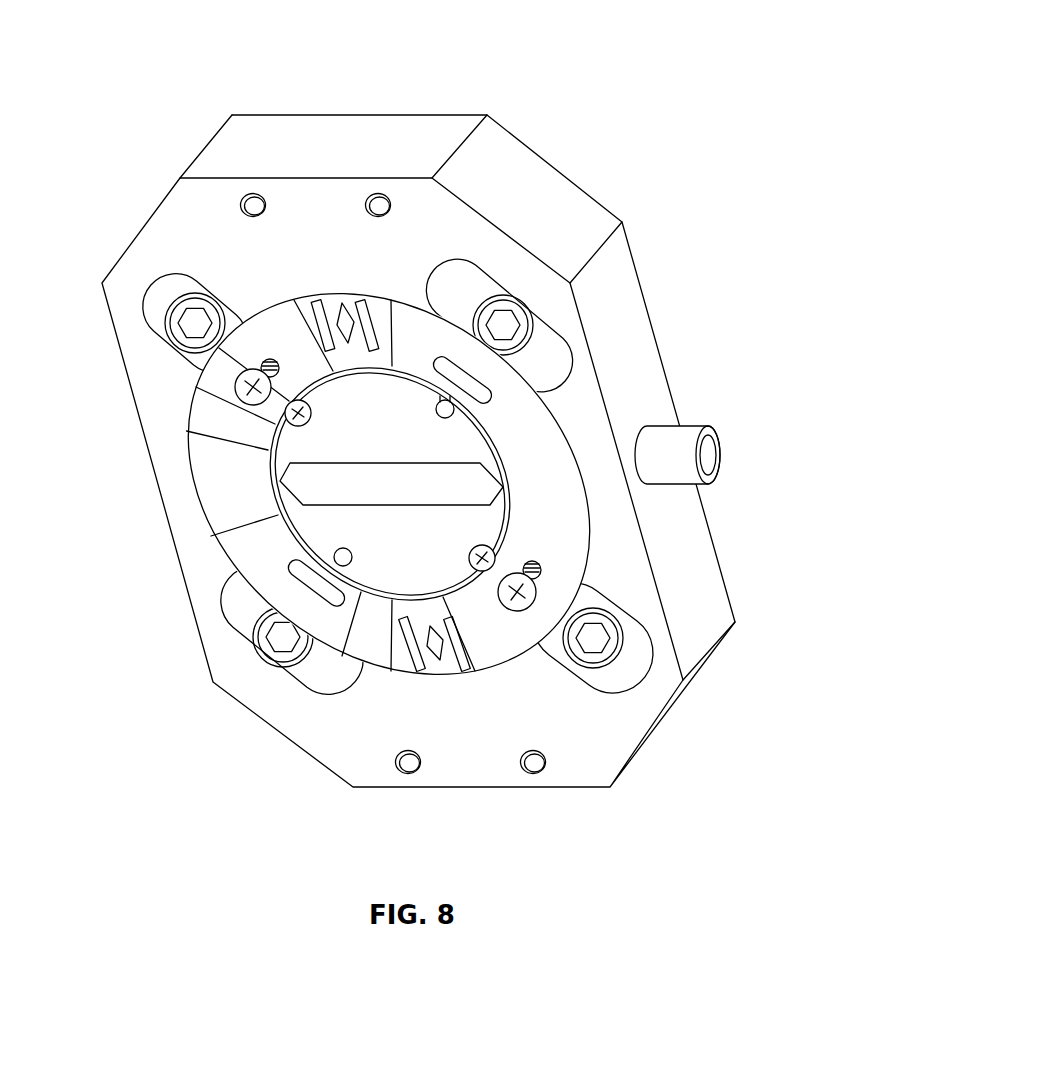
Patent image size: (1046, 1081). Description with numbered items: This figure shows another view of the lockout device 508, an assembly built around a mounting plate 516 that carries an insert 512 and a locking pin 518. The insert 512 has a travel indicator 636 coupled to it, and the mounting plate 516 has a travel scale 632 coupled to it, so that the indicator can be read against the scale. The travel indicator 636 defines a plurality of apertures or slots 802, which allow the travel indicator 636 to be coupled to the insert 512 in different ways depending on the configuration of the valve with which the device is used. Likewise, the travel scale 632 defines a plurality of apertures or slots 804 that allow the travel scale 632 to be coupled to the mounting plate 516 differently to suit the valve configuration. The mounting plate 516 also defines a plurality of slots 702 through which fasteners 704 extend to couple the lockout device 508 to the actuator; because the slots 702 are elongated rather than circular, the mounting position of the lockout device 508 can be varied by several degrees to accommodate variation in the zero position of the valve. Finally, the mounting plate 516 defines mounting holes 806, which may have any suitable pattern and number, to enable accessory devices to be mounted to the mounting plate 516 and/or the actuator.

The lockout device 508 is at (627, 41).
The insert 512 is at (462, 382).
The mounting plate 516 is at (636, 300).
The locking pin 518 is at (720, 452).
The travel scale 632 is at (540, 425).
The travel indicator 636 is at (272, 466).
The slots 702 is at (617, 680).
The fasteners 704 is at (633, 625).
The apertures or slots 802 is at (290, 406).
The apertures or slots 804 is at (458, 372).
The mounting holes 806 is at (252, 200).